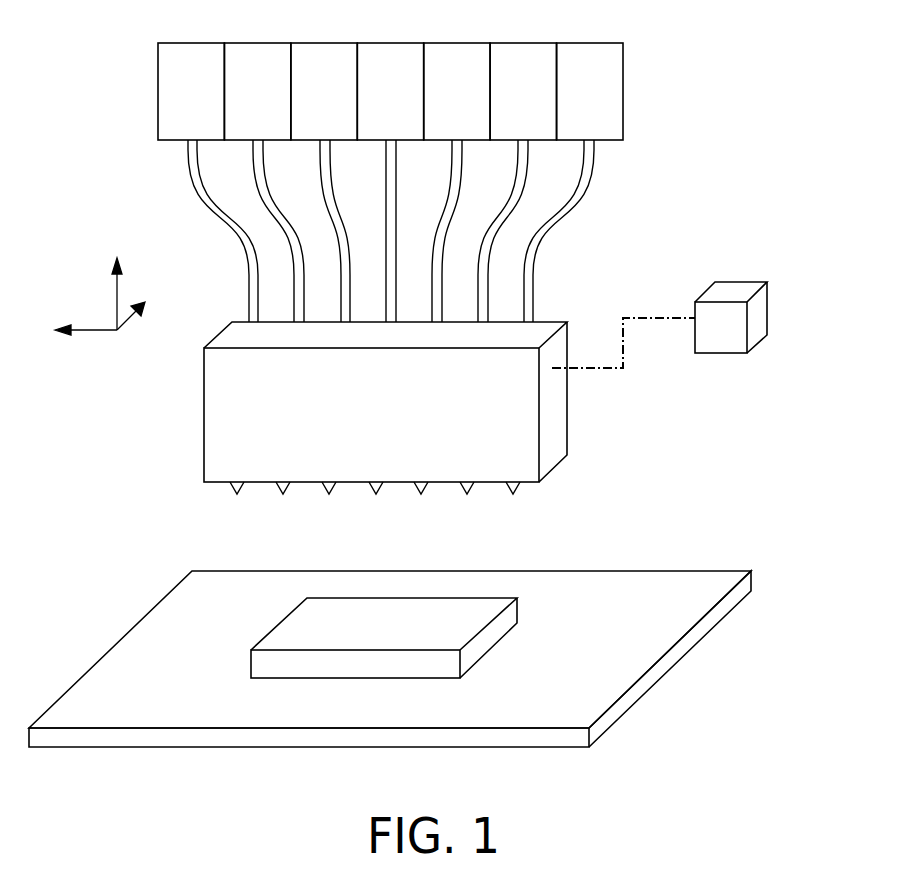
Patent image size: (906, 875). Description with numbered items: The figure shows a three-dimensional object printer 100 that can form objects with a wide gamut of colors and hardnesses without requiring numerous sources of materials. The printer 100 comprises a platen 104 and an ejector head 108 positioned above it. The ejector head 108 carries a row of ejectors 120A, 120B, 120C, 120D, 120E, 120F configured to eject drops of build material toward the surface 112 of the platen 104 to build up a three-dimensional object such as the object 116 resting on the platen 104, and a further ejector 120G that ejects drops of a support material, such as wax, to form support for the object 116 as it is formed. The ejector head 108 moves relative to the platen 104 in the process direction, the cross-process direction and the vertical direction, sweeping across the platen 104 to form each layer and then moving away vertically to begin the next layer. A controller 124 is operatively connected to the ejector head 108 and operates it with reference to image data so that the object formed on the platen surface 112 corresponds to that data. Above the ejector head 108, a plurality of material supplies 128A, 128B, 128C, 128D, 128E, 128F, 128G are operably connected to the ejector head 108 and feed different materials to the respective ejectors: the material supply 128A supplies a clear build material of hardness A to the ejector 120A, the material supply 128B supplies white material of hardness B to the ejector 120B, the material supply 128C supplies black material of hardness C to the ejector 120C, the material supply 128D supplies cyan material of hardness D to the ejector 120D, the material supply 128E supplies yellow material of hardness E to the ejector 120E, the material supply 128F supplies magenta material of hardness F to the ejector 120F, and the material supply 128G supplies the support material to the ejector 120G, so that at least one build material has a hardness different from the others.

The three-dimensional object printer 100 is at (668, 90).
The platen 104 is at (413, 633).
The ejector head 108 is at (553, 322).
The surface 112 is at (158, 618).
The object 116 is at (278, 665).
The ejector 120A is at (237, 494).
The ejector 120B is at (283, 494).
The ejector 120C is at (329, 494).
The ejector 120D is at (376, 494).
The ejector 120E is at (421, 494).
The ejector 120F is at (467, 494).
The ejector 120G is at (513, 494).
The controller 124 is at (730, 293).
The material supply 128A is at (193, 42).
The material supply 128B is at (258, 42).
The material supply 128C is at (325, 42).
The material supply 128D is at (390, 42).
The material supply 128E is at (458, 42).
The material supply 128F is at (523, 42).
The material supply 128G is at (590, 42).